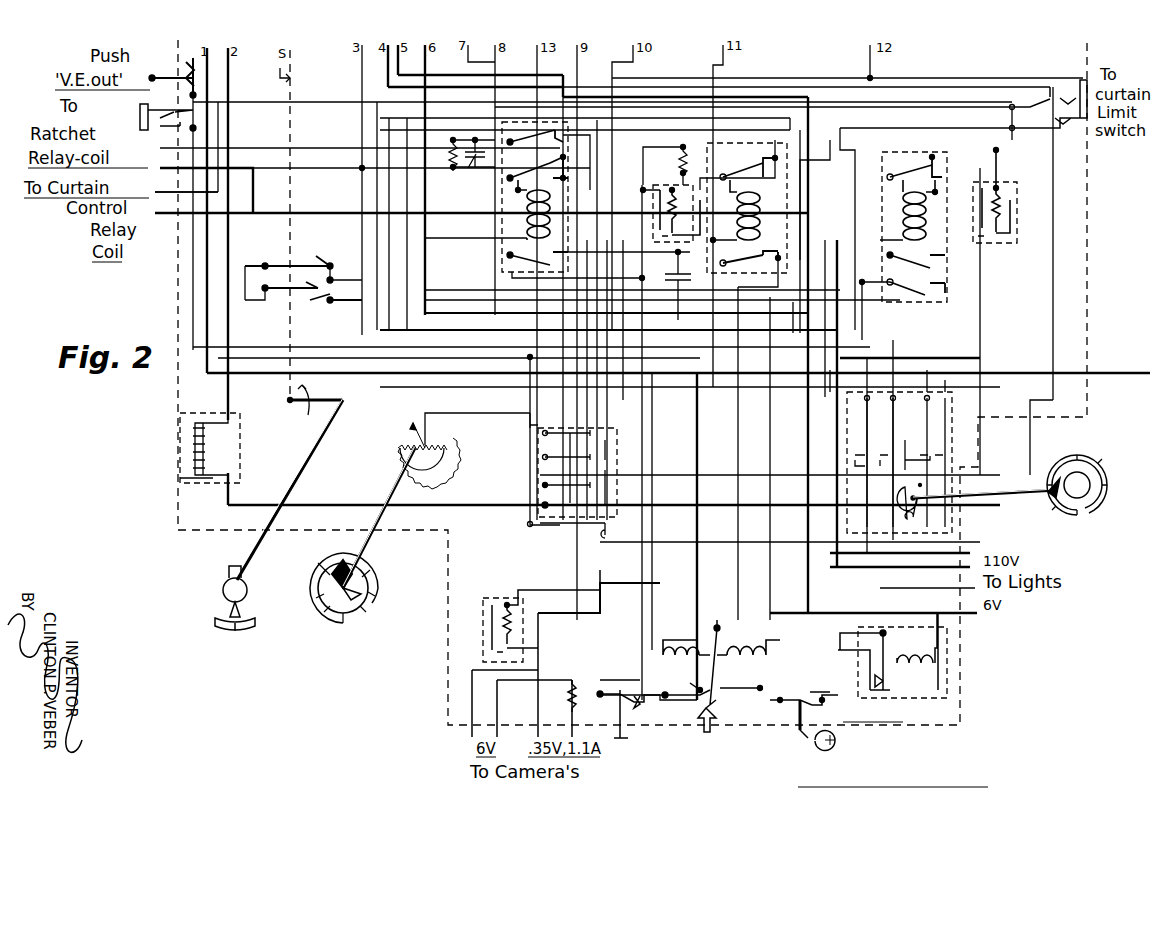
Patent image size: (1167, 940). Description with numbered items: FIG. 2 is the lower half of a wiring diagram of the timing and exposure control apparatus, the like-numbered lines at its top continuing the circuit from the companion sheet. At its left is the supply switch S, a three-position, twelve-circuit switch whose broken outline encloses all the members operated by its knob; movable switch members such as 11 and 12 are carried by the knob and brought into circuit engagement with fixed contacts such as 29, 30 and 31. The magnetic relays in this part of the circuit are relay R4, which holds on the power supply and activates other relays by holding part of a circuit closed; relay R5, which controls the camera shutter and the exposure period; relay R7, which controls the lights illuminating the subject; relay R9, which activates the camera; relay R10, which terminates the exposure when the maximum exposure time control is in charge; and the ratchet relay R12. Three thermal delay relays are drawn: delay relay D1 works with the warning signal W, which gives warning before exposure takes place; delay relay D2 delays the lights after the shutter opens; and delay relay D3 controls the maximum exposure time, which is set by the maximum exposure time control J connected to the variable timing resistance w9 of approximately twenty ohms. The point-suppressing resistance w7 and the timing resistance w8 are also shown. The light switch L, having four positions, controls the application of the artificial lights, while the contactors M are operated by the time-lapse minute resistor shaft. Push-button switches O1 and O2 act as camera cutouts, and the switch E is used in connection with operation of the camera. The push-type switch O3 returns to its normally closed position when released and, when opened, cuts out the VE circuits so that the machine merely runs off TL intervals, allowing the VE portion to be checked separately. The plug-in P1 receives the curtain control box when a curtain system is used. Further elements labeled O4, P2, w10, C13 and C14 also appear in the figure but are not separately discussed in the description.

The push-type switch O3 is at (172, 78).
The ratchet relay coil switch O4 is at (157, 121).
The ratchet relay R12 is at (171, 158).
The plug-in P1 is at (184, 195).
The switch member 11 is at (259, 273).
The switch member 12 is at (258, 299).
The fixed contact 29 is at (291, 255).
The fixed contact 30 is at (313, 274).
The fixed contact 31 is at (336, 306).
The point-suppressing resistance w7 is at (463, 155).
The capacitor C13 is at (478, 162).
The magnetic relay R4 is at (496, 197).
The timing resistance w8 is at (665, 165).
The thermal delay relay D1 is at (670, 213).
The magnetic relay R5 is at (749, 215).
The capacitor C14 is at (670, 285).
The magnetic relay R7 is at (908, 246).
The thermal delay relay D2 is at (1001, 196).
The curtain limit switch P2 is at (1045, 98).
The warning signal W is at (219, 440).
The supply switch S is at (274, 526).
The variable timing resistance w9 is at (464, 451).
The maximum exposure time control J is at (359, 617).
The contactors M is at (556, 465).
The thermal delay relay D3 is at (531, 616).
The resistor w10 is at (562, 696).
The push-button switch O1 is at (632, 731).
The magnetic relay R9 is at (708, 644).
The push-button switch O2 is at (716, 704).
The switch E is at (901, 742).
The magnetic relay R10 is at (892, 655).
The light switch L is at (1002, 462).